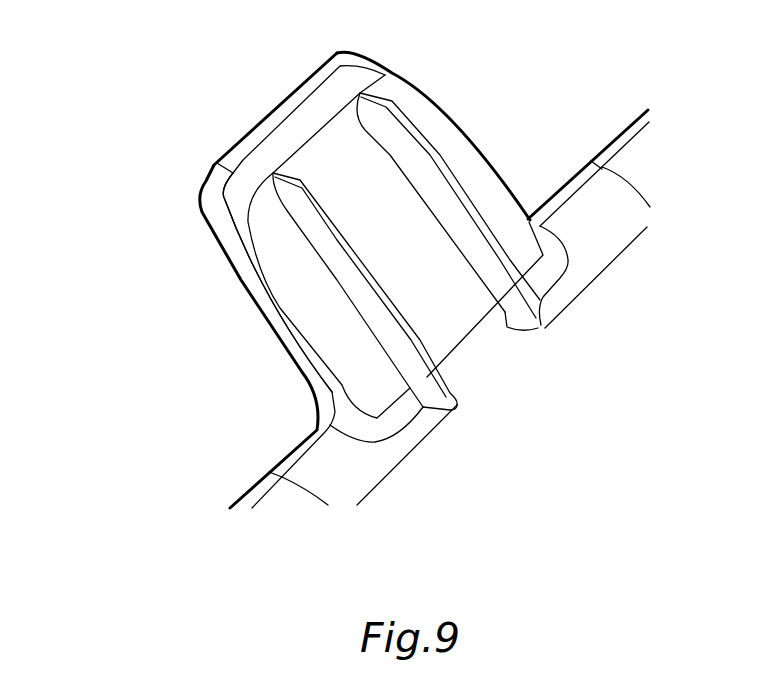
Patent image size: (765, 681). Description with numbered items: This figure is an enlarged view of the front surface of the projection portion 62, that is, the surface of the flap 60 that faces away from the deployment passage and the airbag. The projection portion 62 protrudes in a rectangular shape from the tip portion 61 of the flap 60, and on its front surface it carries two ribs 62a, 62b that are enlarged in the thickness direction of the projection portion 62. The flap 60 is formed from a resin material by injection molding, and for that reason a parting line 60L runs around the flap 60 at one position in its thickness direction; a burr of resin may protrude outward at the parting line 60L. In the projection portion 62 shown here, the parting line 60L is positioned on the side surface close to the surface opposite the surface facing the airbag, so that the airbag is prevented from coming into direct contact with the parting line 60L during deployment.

The flap 60 is at (477, 465).
The parting line 60L is at (237, 243).
The tip portion 61 is at (583, 165).
The projection portion 62 is at (270, 110).
The rib 62a is at (423, 378).
The rib 62b is at (502, 287).